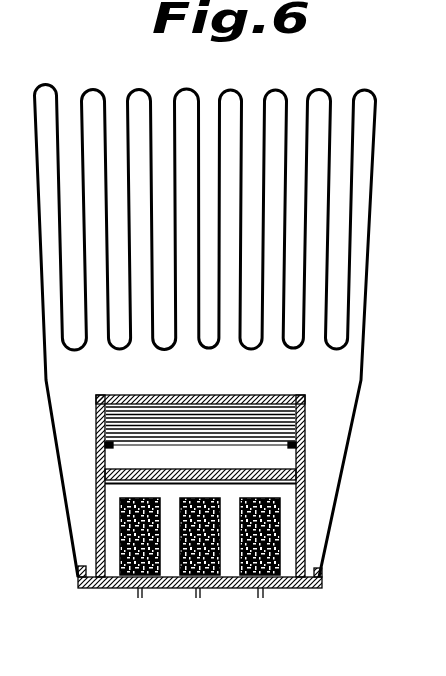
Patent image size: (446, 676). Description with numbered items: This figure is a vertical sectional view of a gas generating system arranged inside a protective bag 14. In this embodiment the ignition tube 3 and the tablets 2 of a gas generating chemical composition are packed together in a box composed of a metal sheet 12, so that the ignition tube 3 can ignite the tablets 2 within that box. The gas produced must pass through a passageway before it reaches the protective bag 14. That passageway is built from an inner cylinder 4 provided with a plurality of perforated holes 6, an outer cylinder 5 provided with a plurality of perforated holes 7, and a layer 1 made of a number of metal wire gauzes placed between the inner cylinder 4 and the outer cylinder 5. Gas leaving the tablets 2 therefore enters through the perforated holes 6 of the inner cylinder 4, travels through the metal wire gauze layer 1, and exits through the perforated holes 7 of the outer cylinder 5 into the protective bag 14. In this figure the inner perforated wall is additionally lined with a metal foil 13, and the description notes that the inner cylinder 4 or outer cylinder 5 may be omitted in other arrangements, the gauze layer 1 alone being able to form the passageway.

The protective bag 14 is at (377, 157).
The perforated holes 7 is at (266, 395).
The outer cylinder 5 is at (282, 395).
The metal wire gauze layer 1 is at (270, 421).
The perforated holes 6 is at (250, 468).
The inner cylinder 4 is at (272, 471).
The metal foil 13 is at (272, 483).
The metal sheet 12 is at (278, 522).
The ignition tube 3 is at (243, 590).
The tablets 2 is at (267, 590).